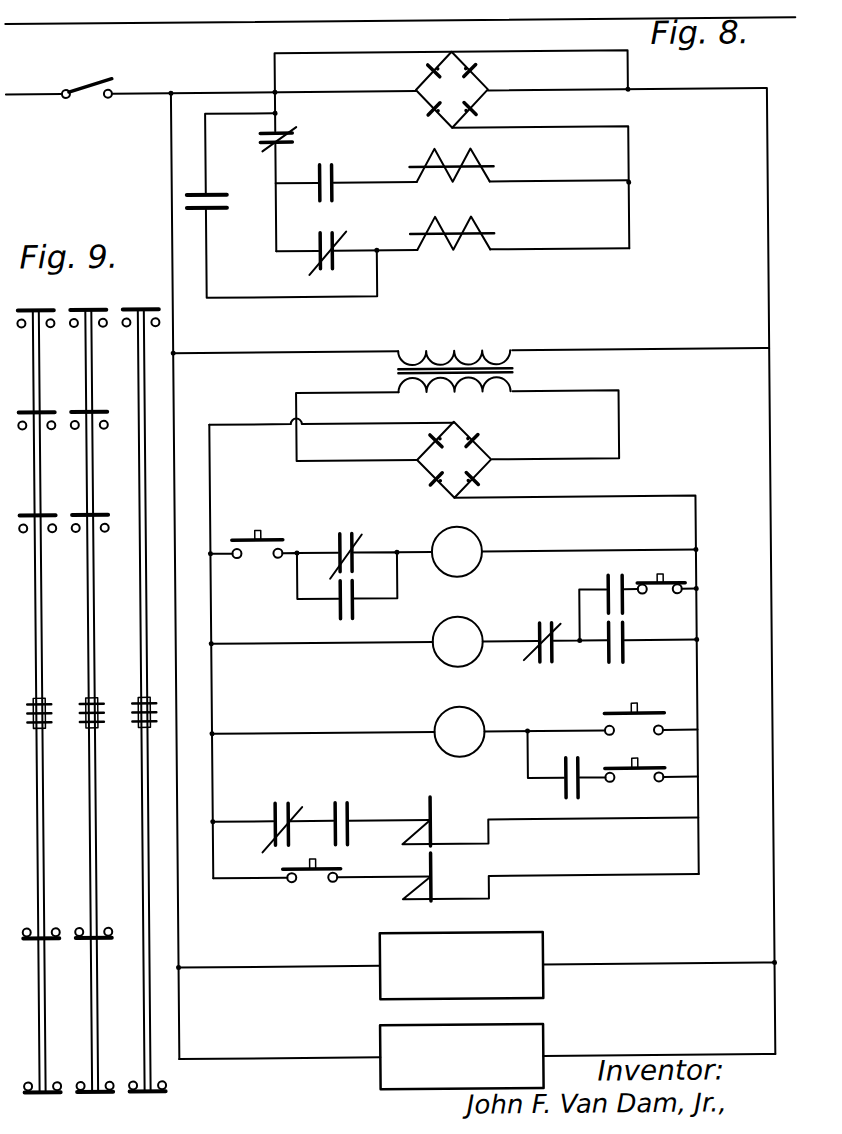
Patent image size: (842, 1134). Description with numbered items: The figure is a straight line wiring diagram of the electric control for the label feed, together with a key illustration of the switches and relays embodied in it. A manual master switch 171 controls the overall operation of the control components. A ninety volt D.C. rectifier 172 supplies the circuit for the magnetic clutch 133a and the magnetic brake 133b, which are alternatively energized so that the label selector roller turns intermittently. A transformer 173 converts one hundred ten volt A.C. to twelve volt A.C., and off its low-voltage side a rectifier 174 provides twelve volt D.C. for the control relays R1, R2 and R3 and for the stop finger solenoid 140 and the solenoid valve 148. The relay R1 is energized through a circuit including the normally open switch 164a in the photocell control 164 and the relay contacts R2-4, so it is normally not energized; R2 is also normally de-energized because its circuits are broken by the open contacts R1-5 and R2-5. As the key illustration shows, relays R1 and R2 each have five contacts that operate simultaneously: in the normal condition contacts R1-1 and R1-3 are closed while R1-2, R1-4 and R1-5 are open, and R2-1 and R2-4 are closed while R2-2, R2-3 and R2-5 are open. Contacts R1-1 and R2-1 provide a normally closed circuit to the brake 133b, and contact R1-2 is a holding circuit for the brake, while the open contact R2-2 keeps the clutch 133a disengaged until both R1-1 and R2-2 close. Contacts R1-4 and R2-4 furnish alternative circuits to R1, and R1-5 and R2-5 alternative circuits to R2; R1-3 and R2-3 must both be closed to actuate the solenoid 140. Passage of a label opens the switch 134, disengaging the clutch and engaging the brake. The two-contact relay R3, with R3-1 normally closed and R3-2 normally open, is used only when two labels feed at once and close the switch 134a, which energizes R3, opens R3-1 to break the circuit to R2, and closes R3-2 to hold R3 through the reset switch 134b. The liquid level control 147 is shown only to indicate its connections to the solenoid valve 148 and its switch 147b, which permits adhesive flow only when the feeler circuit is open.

In FIG. 8, the manual master switch 171 is at (99, 78).
In FIG. 8, the 90 v. D. C. rectifier 172 is at (476, 73).
In FIG. 8, the magnetic clutch 133a is at (479, 157).
In FIG. 8, the magnetic brake 133b is at (479, 223).
In FIG. 8, the transformer 173 is at (516, 370).
In FIG. 8, the rectifier 174 is at (485, 452).
In FIG. 8, the normally open switch 164a is at (272, 522).
In FIG. 8, the switch 134 is at (654, 597).
In FIG. 8, the switch 134a is at (614, 712).
In FIG. 8, the reset switch 134b is at (653, 753).
In FIG. 8, the stop finger solenoid 140 is at (448, 843).
In FIG. 8, the solenoid valve 148 is at (448, 897).
In FIG. 8, the switch 147b is at (307, 882).
In FIG. 8, the photocell control 164 is at (513, 933).
In FIG. 8, the liquid level control mechanism 147 is at (543, 1030).
In FIG. 8, the control relay R1 is at (457, 551).
In FIG. 9, the control relay R1 is at (45, 1112).
In FIG. 8, the control relay R2 is at (457, 641).
In FIG. 9, the control relay R2 is at (97, 1112).
In FIG. 8, the control relay R3 is at (459, 731).
In FIG. 9, the control relay R3 is at (145, 1111).
In FIG. 8, the relay contact R1-1 is at (298, 139).
In FIG. 9, the relay contact R1-1 is at (49, 1082).
In FIG. 8, the relay contact R1-2 is at (222, 211).
In FIG. 9, the relay contact R1-2 is at (44, 511).
In FIG. 8, the relay contact R1-3 is at (282, 817).
In FIG. 9, the relay contact R1-3 is at (49, 930).
In FIG. 8, the relay contact R1-4 is at (359, 609).
In FIG. 9, the relay contact R1-4 is at (44, 408).
In FIG. 8, the relay contact R1-5 is at (617, 651).
In FIG. 9, the relay contact R1-5 is at (38, 306).
In FIG. 8, the relay contact R2-1 is at (329, 255).
In FIG. 9, the relay contact R2-1 is at (101, 1082).
In FIG. 8, the relay contact R2-2 is at (348, 187).
In FIG. 9, the relay contact R2-2 is at (96, 511).
In FIG. 8, the relay contact R2-3 is at (345, 814).
In FIG. 9, the relay contact R2-3 is at (97, 408).
In FIG. 8, the relay contact R2-4 is at (354, 546).
In FIG. 9, the relay contact R2-4 is at (100, 930).
In FIG. 8, the relay contact R2-5 is at (618, 584).
In FIG. 9, the relay contact R2-5 is at (90, 306).
In FIG. 8, the relay contact R3-1 is at (543, 633).
In FIG. 9, the relay contact R3-1 is at (150, 1085).
In FIG. 8, the relay contact R3-2 is at (573, 787).
In FIG. 9, the relay contact R3-2 is at (143, 306).